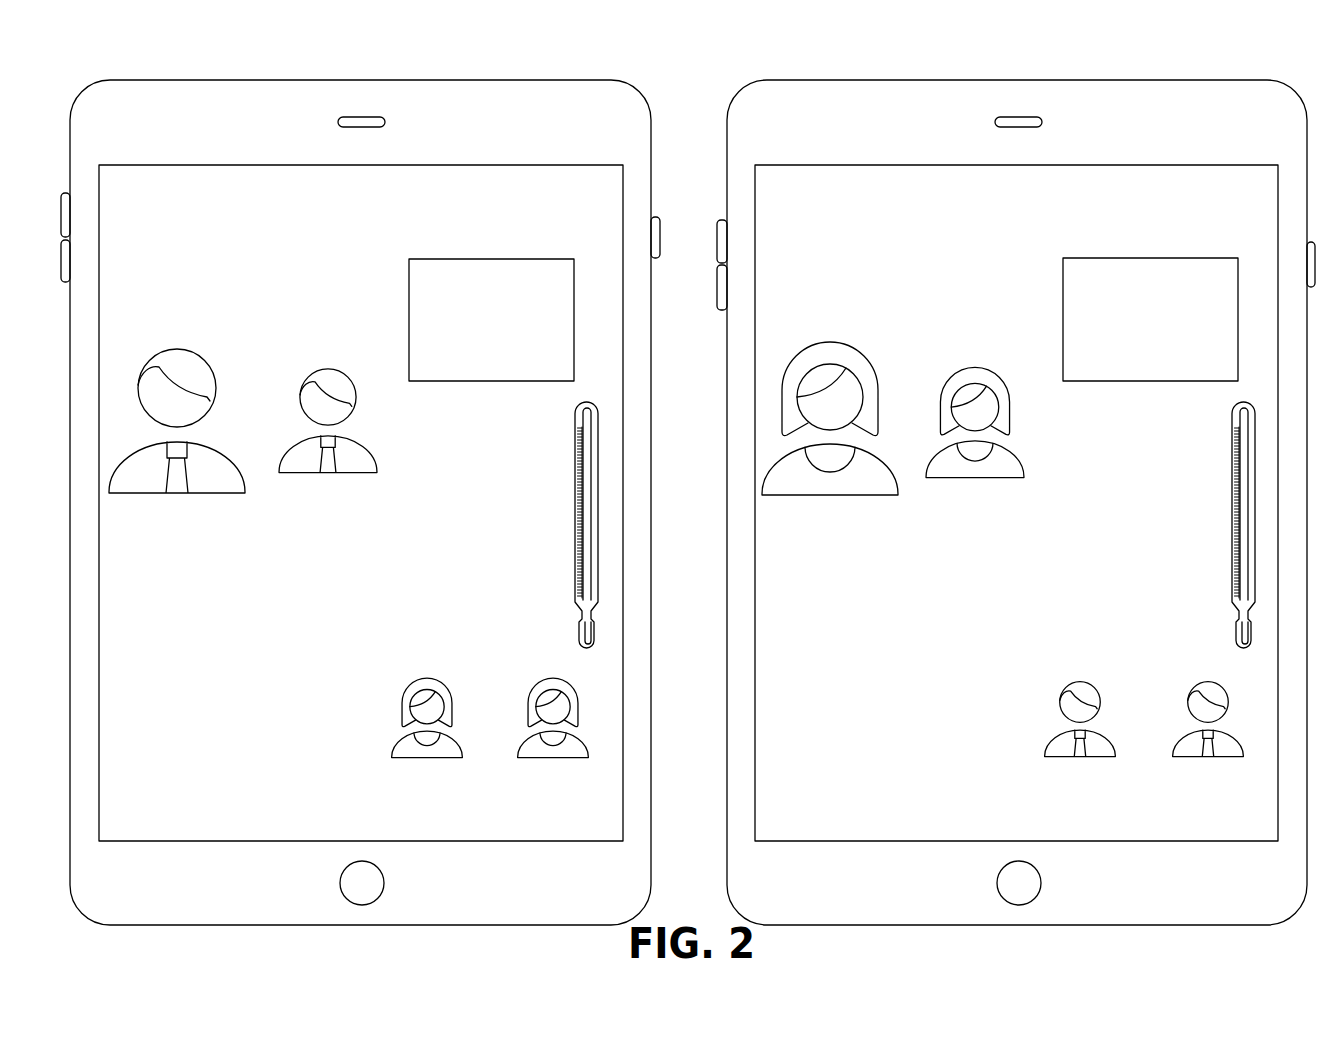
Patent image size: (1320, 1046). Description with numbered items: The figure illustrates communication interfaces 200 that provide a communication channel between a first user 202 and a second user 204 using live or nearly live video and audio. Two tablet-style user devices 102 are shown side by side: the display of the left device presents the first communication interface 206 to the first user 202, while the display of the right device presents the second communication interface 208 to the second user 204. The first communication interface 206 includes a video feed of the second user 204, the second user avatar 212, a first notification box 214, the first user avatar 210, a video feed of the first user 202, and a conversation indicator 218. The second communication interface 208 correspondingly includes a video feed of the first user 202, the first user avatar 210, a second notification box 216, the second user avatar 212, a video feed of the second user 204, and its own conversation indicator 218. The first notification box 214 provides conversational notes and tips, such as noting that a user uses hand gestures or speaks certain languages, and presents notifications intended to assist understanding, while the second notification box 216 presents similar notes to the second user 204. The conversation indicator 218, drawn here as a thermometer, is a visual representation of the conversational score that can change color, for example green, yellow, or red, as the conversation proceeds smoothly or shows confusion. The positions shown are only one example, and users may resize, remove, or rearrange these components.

The communication interfaces 200 is at (94, 72).
The user device 102 is at (116, 152).
The first communication interface 206 is at (475, 164).
The second communication interface 208 is at (1130, 164).
The first user 202 is at (546, 682).
The second user 204 is at (184, 350).
The first user avatar 210 is at (420, 682).
The second user avatar 212 is at (336, 370).
The first notification box 214 is at (492, 258).
The second notification box 216 is at (1147, 257).
The conversation indicator 218 is at (577, 560).